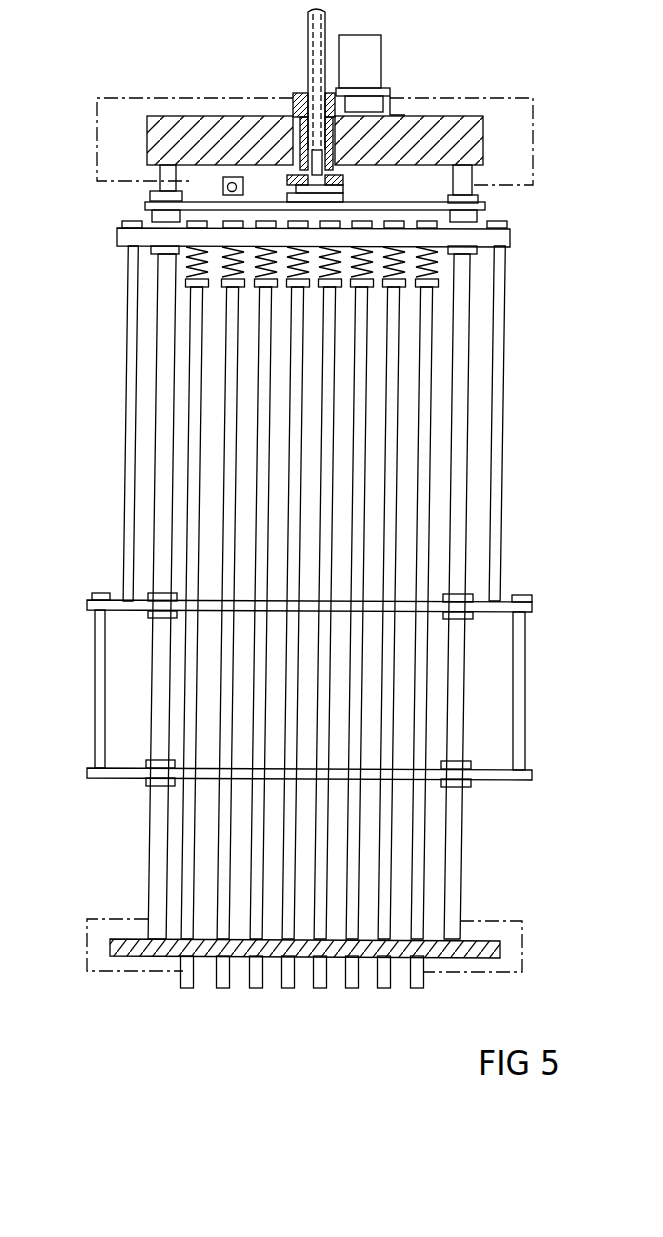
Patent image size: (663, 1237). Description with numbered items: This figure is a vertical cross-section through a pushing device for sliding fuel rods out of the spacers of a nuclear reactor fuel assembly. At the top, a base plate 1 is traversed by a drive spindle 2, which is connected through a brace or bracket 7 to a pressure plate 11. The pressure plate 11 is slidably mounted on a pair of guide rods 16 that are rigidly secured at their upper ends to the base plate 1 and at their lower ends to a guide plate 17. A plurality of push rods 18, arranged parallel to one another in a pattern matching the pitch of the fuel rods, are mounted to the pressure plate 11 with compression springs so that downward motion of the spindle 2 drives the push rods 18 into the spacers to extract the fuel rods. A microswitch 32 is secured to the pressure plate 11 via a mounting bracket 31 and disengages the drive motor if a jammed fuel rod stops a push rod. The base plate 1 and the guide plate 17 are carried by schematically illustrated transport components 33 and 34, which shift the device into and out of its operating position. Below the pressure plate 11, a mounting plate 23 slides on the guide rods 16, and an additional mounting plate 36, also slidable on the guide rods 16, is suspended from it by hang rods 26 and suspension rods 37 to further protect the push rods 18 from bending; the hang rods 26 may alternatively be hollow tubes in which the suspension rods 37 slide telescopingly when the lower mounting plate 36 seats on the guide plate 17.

The base plate 1 is at (148, 140).
The drive spindle 2 is at (310, 44).
The brace or bracket 7 is at (343, 181).
The pressure plate 11 is at (509, 238).
The guide rods 16 is at (152, 847).
The guide plate 17 is at (143, 949).
The push rods 18 is at (254, 979).
The mounting plate 23 is at (533, 607).
The hang rods 26 is at (124, 506).
The mounting bracket 31 is at (245, 188).
The microswitch 32 is at (222, 187).
The transport component 33 is at (533, 167).
The transport component 34 is at (522, 928).
The additional mounting plate 36 is at (489, 768).
The suspension rods 37 is at (93, 668).